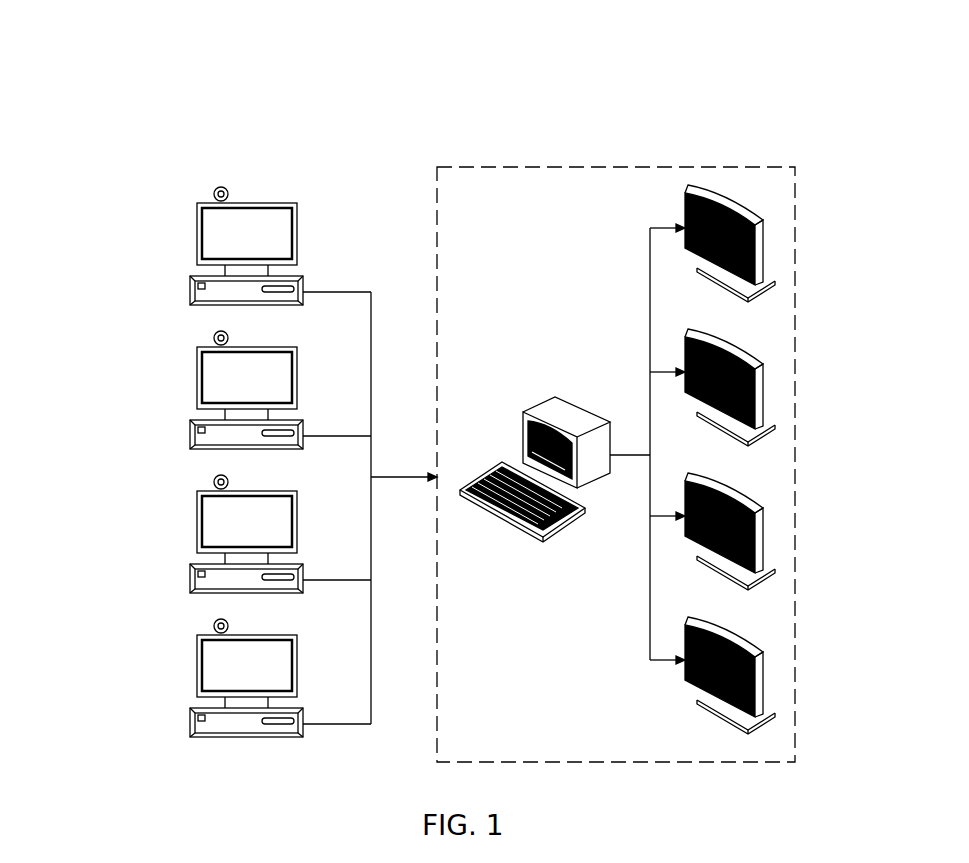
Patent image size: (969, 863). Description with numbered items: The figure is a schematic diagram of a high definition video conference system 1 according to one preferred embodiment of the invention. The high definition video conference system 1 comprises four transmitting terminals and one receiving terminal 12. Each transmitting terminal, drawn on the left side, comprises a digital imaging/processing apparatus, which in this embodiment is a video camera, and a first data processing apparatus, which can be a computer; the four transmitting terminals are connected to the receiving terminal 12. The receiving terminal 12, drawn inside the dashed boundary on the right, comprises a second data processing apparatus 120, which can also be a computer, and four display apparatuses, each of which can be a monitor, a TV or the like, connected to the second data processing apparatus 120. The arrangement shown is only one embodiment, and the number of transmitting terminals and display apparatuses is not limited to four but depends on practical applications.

The high definition video conference system 1 is at (480, 62).
The receiving terminal 12 is at (600, 167).
The second data processing apparatus 120 is at (547, 398).